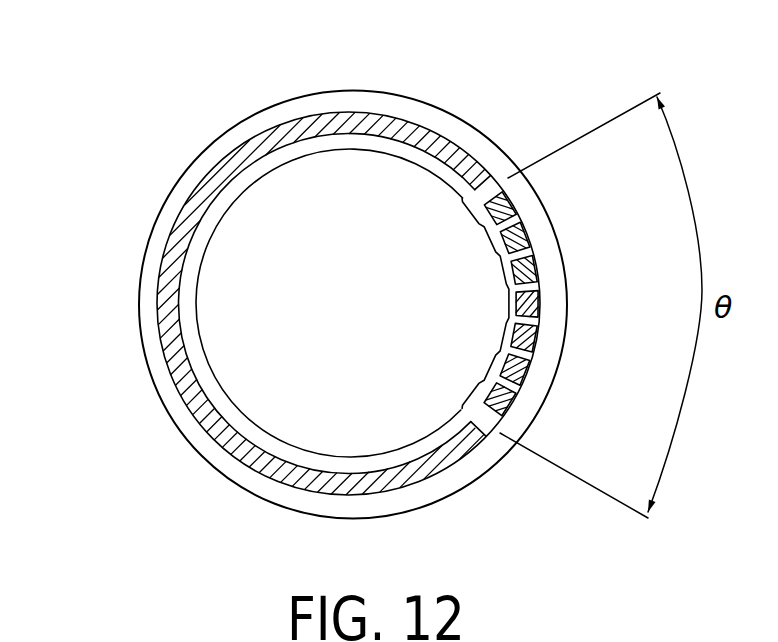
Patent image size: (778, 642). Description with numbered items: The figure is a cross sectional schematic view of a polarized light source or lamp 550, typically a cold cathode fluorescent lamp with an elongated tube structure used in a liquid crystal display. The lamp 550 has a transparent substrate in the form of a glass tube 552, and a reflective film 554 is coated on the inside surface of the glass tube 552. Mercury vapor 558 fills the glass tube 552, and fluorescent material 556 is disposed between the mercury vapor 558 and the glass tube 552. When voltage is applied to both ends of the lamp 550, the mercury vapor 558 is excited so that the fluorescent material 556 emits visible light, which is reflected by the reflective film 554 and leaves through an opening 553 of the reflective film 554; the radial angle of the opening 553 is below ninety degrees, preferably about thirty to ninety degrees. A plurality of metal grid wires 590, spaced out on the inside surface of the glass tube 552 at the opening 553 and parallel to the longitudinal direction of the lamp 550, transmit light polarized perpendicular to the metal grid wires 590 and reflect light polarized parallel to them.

The lamp 550 is at (84, 101).
The glass tube 552 is at (416, 112).
The opening 553 is at (467, 200).
The reflective film 554 is at (325, 125).
The fluorescent material 556 is at (420, 447).
The mercury vapor 558 is at (285, 368).
The metal grid wires 590 is at (545, 311).